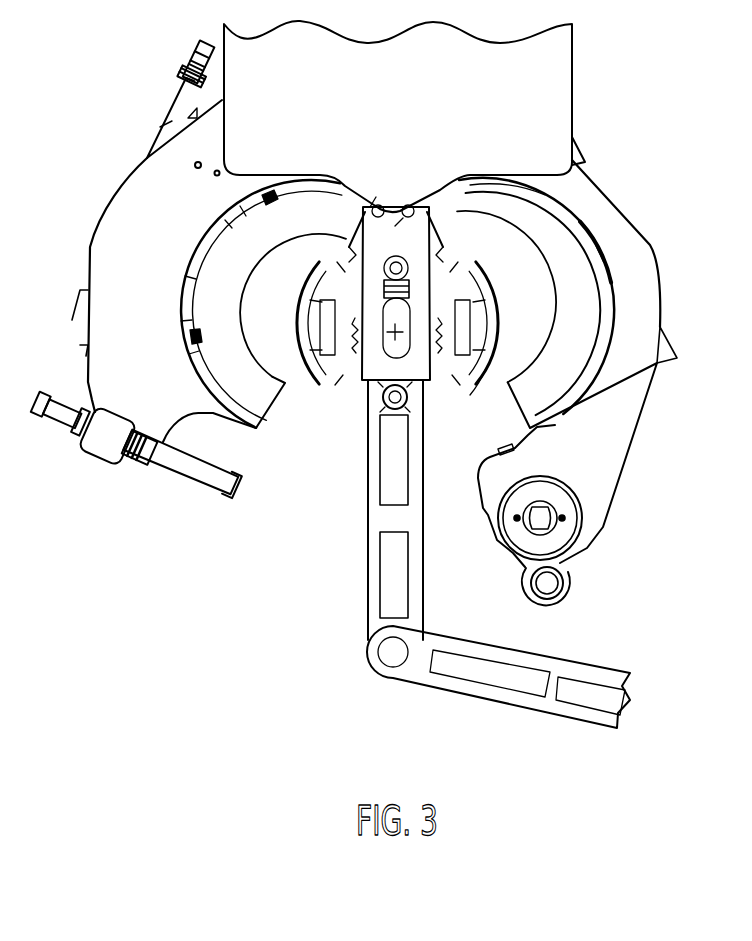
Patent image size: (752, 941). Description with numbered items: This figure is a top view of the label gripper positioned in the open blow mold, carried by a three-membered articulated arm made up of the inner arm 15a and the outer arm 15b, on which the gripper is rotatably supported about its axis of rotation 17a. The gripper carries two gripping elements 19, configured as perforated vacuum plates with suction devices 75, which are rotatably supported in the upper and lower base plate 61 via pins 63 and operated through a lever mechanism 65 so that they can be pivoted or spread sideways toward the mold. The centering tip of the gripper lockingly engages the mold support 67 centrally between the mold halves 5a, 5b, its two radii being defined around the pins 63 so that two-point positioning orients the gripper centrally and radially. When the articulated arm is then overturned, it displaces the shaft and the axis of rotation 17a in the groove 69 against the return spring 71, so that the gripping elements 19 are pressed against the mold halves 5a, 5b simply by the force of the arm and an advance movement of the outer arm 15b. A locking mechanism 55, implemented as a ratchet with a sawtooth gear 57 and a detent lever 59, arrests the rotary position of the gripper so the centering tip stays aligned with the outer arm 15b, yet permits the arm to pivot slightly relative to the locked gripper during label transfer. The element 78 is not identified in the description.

The mold support 67 is at (562, 85).
The lever mechanism 65 is at (310, 268).
The return spring 71 is at (388, 240).
The pins 63 is at (402, 287).
The base plate 61 is at (446, 250).
The groove 69 is at (447, 243).
The gripping elements 19 is at (597, 250).
The mold half 5a is at (227, 272).
The mold half 5b is at (568, 268).
The axis of rotation 17a is at (398, 333).
The latch tab 78 is at (295, 298).
The suction devices 75 is at (300, 372).
The locking mechanism 55 is at (355, 391).
The sawtooth gear 57 is at (445, 372).
The detent lever 59 is at (408, 405).
The outer arm 15b is at (372, 505).
The inner arm 15a is at (418, 679).